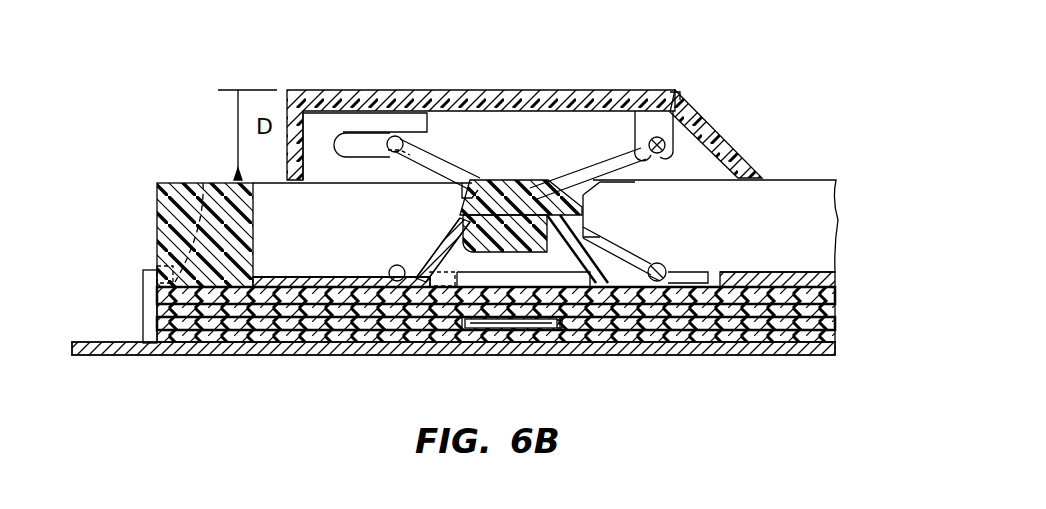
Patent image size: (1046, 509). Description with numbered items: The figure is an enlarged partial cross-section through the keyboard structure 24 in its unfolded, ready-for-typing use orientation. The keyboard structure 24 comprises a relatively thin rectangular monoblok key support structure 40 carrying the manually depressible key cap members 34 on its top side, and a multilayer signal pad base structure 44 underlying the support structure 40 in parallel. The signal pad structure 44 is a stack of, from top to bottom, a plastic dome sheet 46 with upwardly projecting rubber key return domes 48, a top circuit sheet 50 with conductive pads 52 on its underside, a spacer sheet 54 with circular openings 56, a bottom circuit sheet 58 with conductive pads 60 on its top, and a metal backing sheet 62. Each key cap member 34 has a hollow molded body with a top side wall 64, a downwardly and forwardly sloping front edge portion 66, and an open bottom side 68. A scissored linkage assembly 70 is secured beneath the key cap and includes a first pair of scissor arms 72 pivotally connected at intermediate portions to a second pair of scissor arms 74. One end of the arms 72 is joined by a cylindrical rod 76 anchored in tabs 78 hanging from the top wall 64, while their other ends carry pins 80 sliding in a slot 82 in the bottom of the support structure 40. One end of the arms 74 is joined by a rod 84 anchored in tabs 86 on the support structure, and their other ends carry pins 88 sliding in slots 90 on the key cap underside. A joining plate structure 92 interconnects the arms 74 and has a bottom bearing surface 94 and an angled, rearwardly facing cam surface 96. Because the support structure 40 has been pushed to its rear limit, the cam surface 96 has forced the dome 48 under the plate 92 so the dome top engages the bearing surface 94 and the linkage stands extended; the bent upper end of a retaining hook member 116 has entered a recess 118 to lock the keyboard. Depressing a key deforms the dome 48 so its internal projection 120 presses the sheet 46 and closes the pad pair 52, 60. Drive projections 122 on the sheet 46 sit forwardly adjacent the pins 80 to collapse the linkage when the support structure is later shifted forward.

The keyboard structure 24 is at (152, 116).
The key cap member 34 is at (457, 88).
The key support structure 40 is at (190, 200).
The signal pad base structure 44 is at (782, 270).
The dome sheet 46 is at (840, 290).
The key return dome 48 is at (592, 236).
The top circuit sheet 50 is at (842, 305).
The conductive pad 52 is at (470, 330).
The spacer sheet 54 is at (838, 322).
The circular opening 56 is at (556, 330).
The bottom circuit sheet 58 is at (836, 337).
The conductive pad 60 is at (524, 330).
The metal backing sheet 62 is at (78, 326).
The top side wall 64 is at (596, 90).
The sloping front edge portion 66 is at (724, 140).
The open bottom side 68 is at (346, 194).
The scissored linkage assembly 70 is at (483, 140).
The first pair of scissor arms 72 is at (605, 200).
The second pair of scissor arms 74 is at (646, 236).
The cylindrical rod 76 is at (677, 103).
The tab 78 is at (650, 122).
The cylindrical pin 80 is at (394, 266).
The slot 82 is at (317, 277).
The cylindrical rod 84 is at (663, 264).
The tab 86 is at (704, 271).
The cylindrical pin 88 is at (395, 138).
The slot 90 is at (350, 138).
The joining plate structure 92 is at (507, 160).
The bottom bearing surface 94 is at (528, 212).
The cam surface 96 is at (466, 197).
The retaining hook member 116 is at (143, 272).
The recess 118 is at (203, 178).
The internal projection 120 is at (440, 240).
The drive projection 122 is at (425, 318).